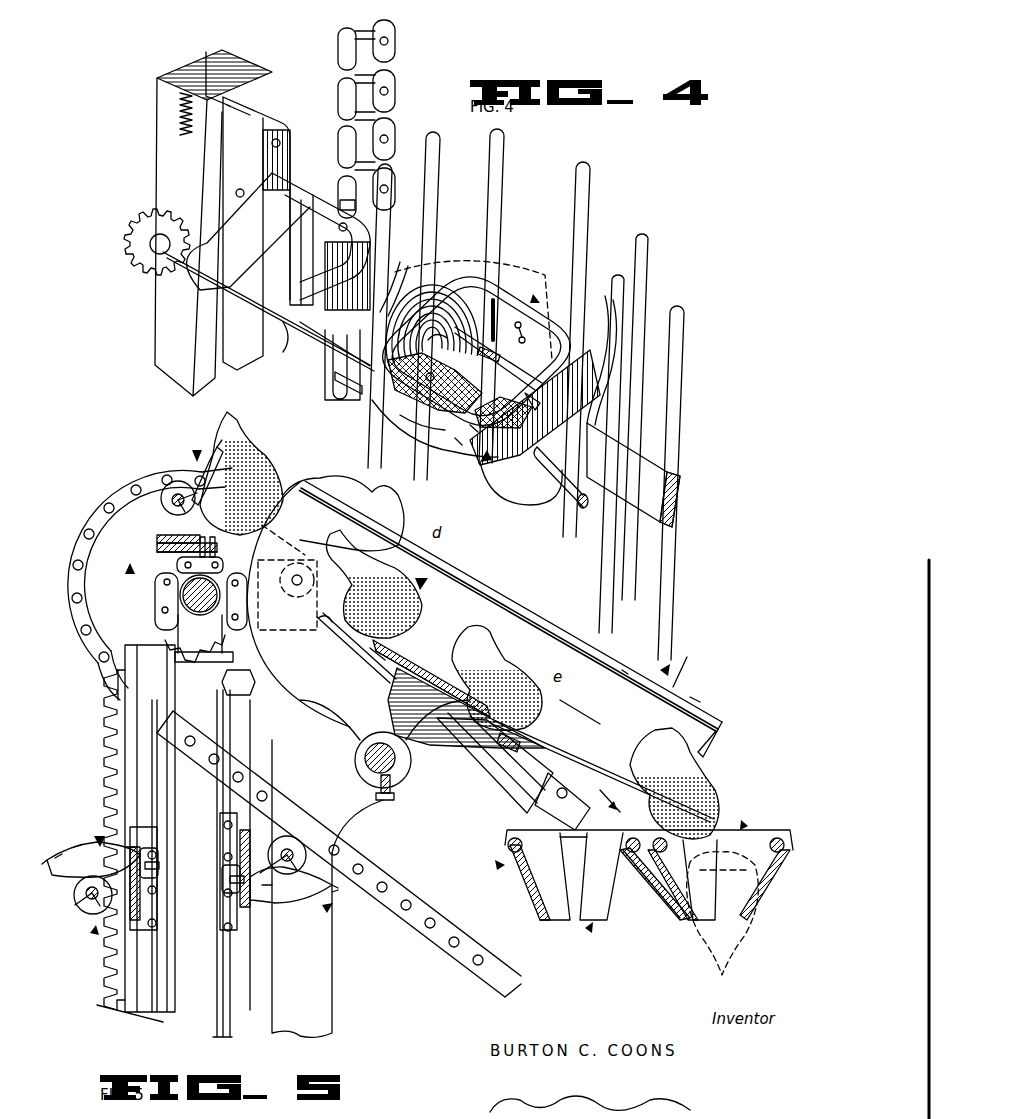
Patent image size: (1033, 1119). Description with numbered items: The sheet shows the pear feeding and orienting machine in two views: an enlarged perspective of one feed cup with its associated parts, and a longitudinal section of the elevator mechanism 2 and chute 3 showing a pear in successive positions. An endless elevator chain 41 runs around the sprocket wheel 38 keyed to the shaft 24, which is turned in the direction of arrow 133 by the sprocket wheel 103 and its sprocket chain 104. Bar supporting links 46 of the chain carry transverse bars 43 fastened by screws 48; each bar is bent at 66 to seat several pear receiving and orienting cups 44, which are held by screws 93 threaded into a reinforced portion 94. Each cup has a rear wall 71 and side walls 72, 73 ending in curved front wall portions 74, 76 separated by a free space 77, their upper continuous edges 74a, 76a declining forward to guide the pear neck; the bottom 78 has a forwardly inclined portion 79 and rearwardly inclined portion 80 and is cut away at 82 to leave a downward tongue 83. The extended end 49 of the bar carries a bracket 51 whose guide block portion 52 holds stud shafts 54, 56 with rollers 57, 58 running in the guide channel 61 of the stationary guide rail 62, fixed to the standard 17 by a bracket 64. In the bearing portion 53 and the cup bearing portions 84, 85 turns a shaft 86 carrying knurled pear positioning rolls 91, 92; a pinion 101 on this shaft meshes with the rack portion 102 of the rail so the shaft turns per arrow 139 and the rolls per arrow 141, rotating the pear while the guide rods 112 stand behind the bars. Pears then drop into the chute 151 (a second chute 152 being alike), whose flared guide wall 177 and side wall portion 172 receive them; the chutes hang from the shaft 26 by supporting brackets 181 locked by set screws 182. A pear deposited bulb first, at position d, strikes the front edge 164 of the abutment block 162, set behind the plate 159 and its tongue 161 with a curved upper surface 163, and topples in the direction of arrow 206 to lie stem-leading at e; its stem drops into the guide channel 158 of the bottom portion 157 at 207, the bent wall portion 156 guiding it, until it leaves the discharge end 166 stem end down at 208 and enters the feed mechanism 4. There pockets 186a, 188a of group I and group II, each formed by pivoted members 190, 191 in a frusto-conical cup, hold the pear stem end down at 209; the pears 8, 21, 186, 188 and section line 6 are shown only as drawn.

In FIG. 5, the elevator mechanism 2 is at (95, 928).
In FIG. 5, the conveyor 3 is at (690, 697).
In FIG. 5, the feed or transfer mechanism 4 is at (498, 865).
In FIG. 5, the section line 6 is at (651, 736).
In FIG. 4, the plate 8 is at (437, 343).
In FIG. 5, the standard 17 is at (318, 984).
In FIG. 5, the pivot pin 21 is at (408, 775).
In FIG. 5, the shaft 24 is at (182, 595).
In FIG. 5, the shaft 26 is at (372, 750).
In FIG. 5, the sprocket wheel 38 is at (180, 609).
In FIG. 4, the endless elevator chain 41 is at (390, 35).
In FIG. 5, the endless elevator chain 41 is at (247, 608).
In FIG. 4, the transverse bar 43 is at (362, 256).
In FIG. 5, the transverse bar 43 is at (162, 546).
In FIG. 4, the pear receiving and orienting cup 44 is at (487, 450).
In FIG. 5, the pear receiving and orienting cup 44 is at (197, 455).
In FIG. 4, the bar supporting link 46 is at (355, 204).
In FIG. 5, the bar supporting link 46 is at (178, 565).
In FIG. 4, the screw 48 is at (340, 231).
In FIG. 4, the extending end of transverse bar 49 is at (324, 198).
In FIG. 4, the bracket 51 is at (230, 223).
In FIG. 4, the guide block portion 52 is at (255, 130).
In FIG. 5, the guide block portion 52 is at (247, 557).
In FIG. 4, the bearing portion 53 is at (190, 282).
In FIG. 4, the stud shaft 54 is at (281, 143).
In FIG. 4, the stud shaft 56 is at (308, 268).
In FIG. 4, the roller 57 is at (227, 107).
In FIG. 4, the roller 58 is at (223, 213).
In FIG. 4, the guide channel 61 is at (225, 72).
In FIG. 5, the guide channel 61 is at (123, 704).
In FIG. 4, the guide rail 62 is at (175, 340).
In FIG. 5, the guide rail 62 is at (122, 772).
In FIG. 5, the bracket 64 is at (222, 673).
In FIG. 4, the bent portion of transverse bar 66 is at (378, 270).
In FIG. 4, the rear wall 71 is at (490, 307).
In FIG. 5, the rear wall 71 is at (177, 528).
In FIG. 4, the side wall 72 is at (432, 325).
In FIG. 5, the side wall 72 is at (88, 871).
In FIG. 4, the side wall 73 is at (547, 436).
In FIG. 4, the front wall portion 74 is at (383, 410).
In FIG. 5, the front wall portion 74 is at (205, 470).
In FIG. 4, the continuous edge 74a is at (358, 357).
In FIG. 5, the continuous edge 74a is at (52, 860).
In FIG. 4, the front wall portion 76 is at (440, 446).
In FIG. 4, the continuous edge 76a is at (500, 490).
In FIG. 4, the free space 77 is at (410, 422).
In FIG. 4, the bottom 78 is at (459, 358).
In FIG. 4, the forwardly inclined portion 79 is at (398, 411).
In FIG. 4, the rearwardly inclined portion 80 is at (483, 377).
In FIG. 4, the cut away portion 82 is at (530, 392).
In FIG. 4, the tongue 83 is at (503, 401).
In FIG. 5, the tongue 83 is at (152, 510).
In FIG. 4, the bearing portion 84 is at (565, 504).
In FIG. 5, the bearing portion 85 is at (162, 480).
In FIG. 4, the shaft 86 is at (305, 330).
In FIG. 5, the shaft 86 is at (172, 500).
In FIG. 4, the pear positioning roll 91 is at (447, 345).
In FIG. 5, the pear positioning roll 91 is at (176, 485).
In FIG. 4, the pear positioning roll 92 is at (472, 430).
In FIG. 4, the screw 93 is at (525, 338).
In FIG. 5, the screw 93 is at (233, 878).
In FIG. 4, the reinforced portion 94 is at (527, 290).
In FIG. 4, the pinion 101 is at (126, 250).
In FIG. 4, the rack portion 102 is at (176, 120).
In FIG. 5, the rack portion 102 is at (118, 727).
In FIG. 5, the sprocket wheel 103 is at (120, 538).
In FIG. 5, the sprocket chain 104 is at (85, 660).
In FIG. 4, the vertical rod 112 is at (380, 213).
In FIG. 5, the arrow 133 is at (130, 568).
In FIG. 4, the arrow 139 is at (278, 332).
In FIG. 4, the arrow 141 is at (457, 442).
In FIG. 5, the chute 151 is at (528, 623).
In FIG. 5, the chute 152 is at (512, 790).
In FIG. 5, the wall portion 156 is at (622, 670).
In FIG. 5, the bottom portion 157 is at (560, 791).
In FIG. 5, the guide channel 158 is at (585, 779).
In FIG. 5, the plate 159 is at (362, 640).
In FIG. 5, the tongue 161 is at (323, 628).
In FIG. 5, the abutment block 162 is at (369, 666).
In FIG. 5, the upper surface 163 is at (418, 660).
In FIG. 5, the front edge 164 is at (400, 650).
In FIG. 5, the discharge end 166 is at (717, 747).
In FIG. 5, the side wall portion 172 is at (580, 720).
In FIG. 5, the guide wall 177 is at (290, 492).
In FIG. 5, the supporting bracket 181 is at (466, 708).
In FIG. 5, the set screw 182 is at (386, 800).
In FIG. 5, the cup bar 186 is at (745, 845).
In FIG. 5, the pocket 186a is at (685, 906).
In FIG. 5, the finger 188 is at (530, 896).
In FIG. 5, the pocket 188a is at (540, 922).
In FIG. 5, the pivotally mounted member 190 is at (760, 898).
In FIG. 5, the pivotally mounted member 191 is at (515, 883).
In FIG. 5, the arrow 206 is at (418, 580).
In FIG. 5, the stem end in guide channel 207 is at (514, 742).
In FIG. 5, the pear leaving discharge end 208 is at (700, 786).
In FIG. 5, the pear in pocket 209 is at (706, 938).
In FIG. 5, the group I is at (742, 826).
In FIG. 5, the group II is at (591, 926).